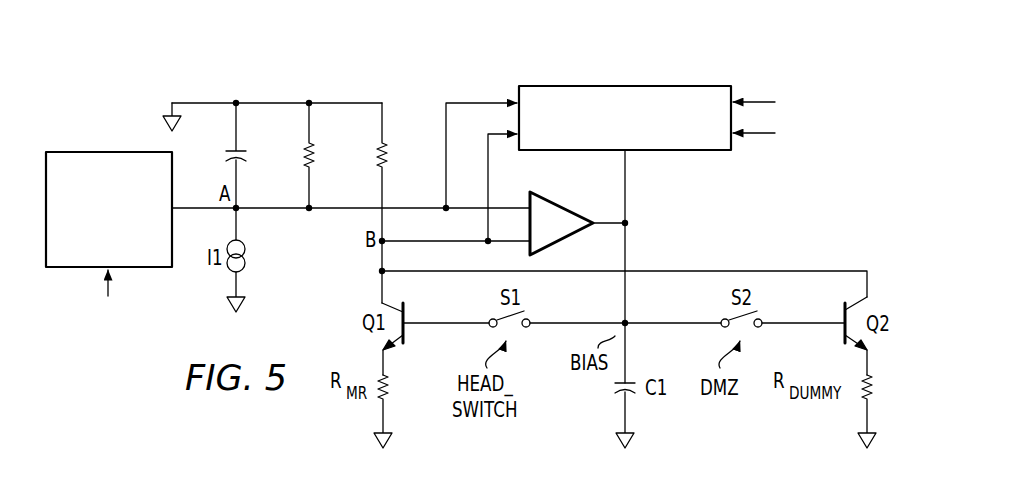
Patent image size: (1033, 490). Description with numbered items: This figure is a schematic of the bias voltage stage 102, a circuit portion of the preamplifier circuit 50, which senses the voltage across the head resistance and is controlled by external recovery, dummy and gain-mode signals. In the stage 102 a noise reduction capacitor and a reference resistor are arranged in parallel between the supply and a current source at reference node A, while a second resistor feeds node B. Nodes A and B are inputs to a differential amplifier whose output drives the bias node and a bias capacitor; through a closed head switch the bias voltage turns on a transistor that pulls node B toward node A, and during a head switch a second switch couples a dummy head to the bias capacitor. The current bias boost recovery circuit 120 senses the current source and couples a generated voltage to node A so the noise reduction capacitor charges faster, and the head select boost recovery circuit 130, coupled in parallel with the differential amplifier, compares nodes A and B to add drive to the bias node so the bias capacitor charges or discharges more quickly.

The current bias boost recovery circuit 120 is at (97, 150).
The bias voltage stage 102 is at (351, 71).
The head select boost recovery circuit 130 is at (647, 85).
The transconductance amplifier bias circuit 50 is at (529, 64).